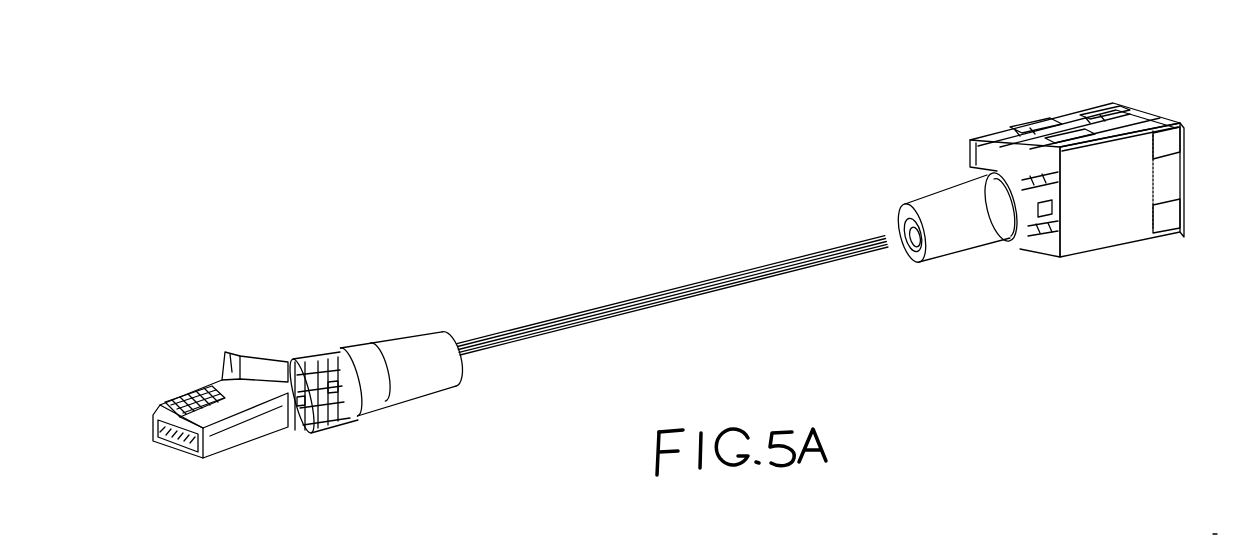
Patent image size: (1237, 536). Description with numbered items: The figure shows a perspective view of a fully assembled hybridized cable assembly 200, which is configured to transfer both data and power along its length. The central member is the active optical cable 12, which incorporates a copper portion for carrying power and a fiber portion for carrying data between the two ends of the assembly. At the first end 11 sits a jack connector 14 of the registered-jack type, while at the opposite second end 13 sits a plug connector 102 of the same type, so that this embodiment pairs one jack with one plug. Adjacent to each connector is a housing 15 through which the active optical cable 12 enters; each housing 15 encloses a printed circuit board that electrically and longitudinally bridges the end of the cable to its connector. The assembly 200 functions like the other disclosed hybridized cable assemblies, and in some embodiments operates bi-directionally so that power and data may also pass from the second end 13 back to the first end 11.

The hybridized cable assembly 200 is at (468, 440).
The first end 11 is at (325, 275).
The active optical cable 12 is at (705, 270).
The second end 13 is at (930, 150).
The RJ-45 jack connector 14 is at (202, 380).
The housing 15 is at (417, 408).
The RJ-45 plug connector 102 is at (1157, 108).